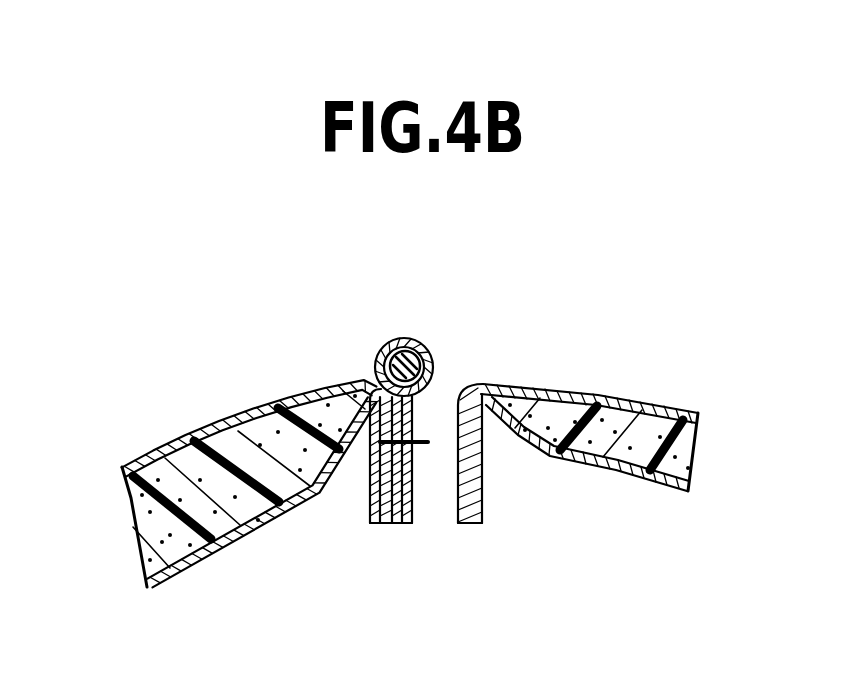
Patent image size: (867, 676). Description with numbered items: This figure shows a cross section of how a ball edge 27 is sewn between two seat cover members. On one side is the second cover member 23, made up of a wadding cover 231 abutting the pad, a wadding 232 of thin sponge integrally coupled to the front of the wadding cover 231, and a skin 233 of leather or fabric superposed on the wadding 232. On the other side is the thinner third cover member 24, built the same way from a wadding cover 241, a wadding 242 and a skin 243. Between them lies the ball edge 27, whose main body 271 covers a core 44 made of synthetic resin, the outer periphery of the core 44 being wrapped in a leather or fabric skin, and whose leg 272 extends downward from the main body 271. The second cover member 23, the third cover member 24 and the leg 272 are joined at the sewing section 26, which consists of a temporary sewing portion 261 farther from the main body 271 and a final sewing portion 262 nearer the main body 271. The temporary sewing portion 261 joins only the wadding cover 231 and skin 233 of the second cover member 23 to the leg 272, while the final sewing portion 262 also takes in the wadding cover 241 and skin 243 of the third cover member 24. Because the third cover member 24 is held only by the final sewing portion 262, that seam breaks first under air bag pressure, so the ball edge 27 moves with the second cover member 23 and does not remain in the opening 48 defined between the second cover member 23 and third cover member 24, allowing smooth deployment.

The second cover member 23 is at (213, 487).
The wadding cover 231 is at (180, 572).
The wadding 232 is at (98, 527).
The skin 233 is at (262, 406).
The third cover member 24 is at (638, 423).
The wadding cover 241 is at (660, 485).
The wadding 242 is at (696, 453).
The skin 243 is at (673, 405).
The sewing section 26 is at (407, 524).
The temporary sewing portion 261 is at (366, 485).
The final sewing portion 262 is at (430, 443).
The ball edge 27 is at (386, 408).
The main body 271 is at (410, 338).
The leg 272 is at (340, 485).
The core 44 is at (392, 347).
The opening 48 is at (438, 406).